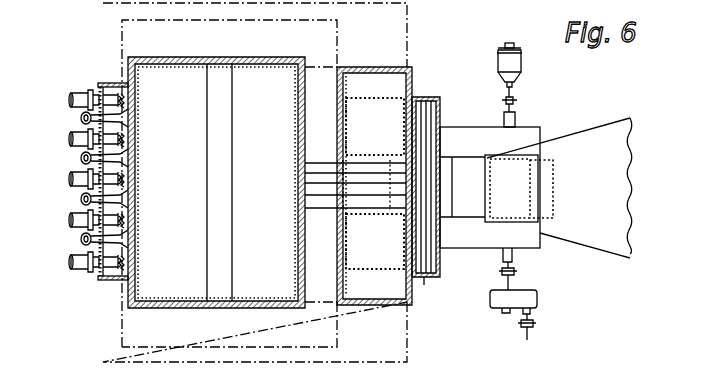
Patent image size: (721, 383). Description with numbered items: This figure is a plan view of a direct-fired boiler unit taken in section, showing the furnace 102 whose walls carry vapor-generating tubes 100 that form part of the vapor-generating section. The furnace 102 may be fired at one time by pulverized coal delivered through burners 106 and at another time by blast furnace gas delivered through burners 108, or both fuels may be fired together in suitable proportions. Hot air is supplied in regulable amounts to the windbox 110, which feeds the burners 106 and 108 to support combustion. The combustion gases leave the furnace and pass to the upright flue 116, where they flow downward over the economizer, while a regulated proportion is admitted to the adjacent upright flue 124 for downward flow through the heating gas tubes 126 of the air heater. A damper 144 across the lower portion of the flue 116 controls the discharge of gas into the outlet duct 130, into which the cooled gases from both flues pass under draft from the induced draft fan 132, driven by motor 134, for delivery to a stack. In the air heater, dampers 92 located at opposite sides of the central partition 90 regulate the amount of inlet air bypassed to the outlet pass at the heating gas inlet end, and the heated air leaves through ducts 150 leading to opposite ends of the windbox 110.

The central partition 90 is at (345, 200).
The dampers 92 is at (352, 163).
The tubes 100 is at (152, 301).
The furnace 102 is at (198, 177).
The burners 106 is at (80, 242).
The burners 108 is at (69, 176).
The windbox 110 is at (104, 282).
The upright flue 116 is at (440, 112).
The upright flue 124 is at (413, 82).
The heating gas tubes 126 is at (396, 102).
The outlet duct 130 is at (478, 249).
The induced draft fan 132 is at (553, 180).
The motor 134 is at (521, 60).
The damper 144 is at (424, 280).
The ducts 150 is at (254, 52).